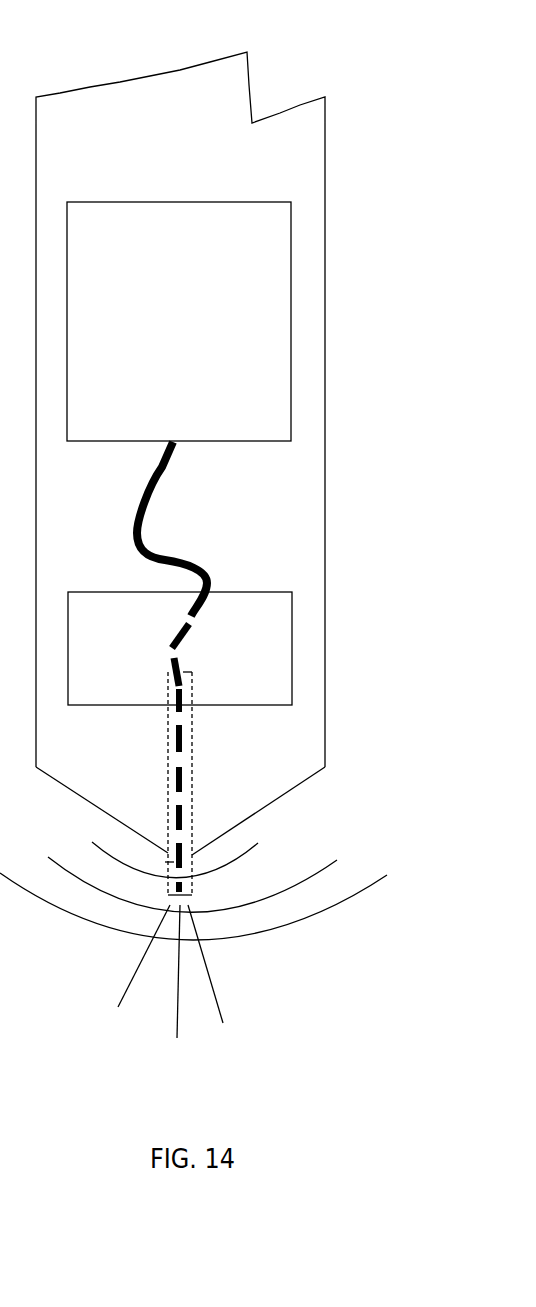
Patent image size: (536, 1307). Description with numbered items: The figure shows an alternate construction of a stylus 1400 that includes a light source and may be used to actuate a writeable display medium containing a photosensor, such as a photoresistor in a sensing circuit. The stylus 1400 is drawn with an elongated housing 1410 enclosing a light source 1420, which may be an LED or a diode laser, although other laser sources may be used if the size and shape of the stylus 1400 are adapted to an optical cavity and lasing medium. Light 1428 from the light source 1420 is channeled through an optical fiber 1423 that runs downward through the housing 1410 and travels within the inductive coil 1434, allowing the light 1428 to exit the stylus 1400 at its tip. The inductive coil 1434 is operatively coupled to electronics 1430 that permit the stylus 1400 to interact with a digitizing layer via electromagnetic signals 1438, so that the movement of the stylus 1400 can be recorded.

The stylus 1400 is at (203, 551).
The housing 1410 is at (213, 171).
The light source 1420 is at (205, 369).
The optical fiber 1423 is at (148, 520).
The electronics 1430 is at (257, 631).
The inductive coil 1434 is at (192, 807).
The electromagnetic signals 1438 is at (230, 927).
The light 1428 is at (198, 1023).